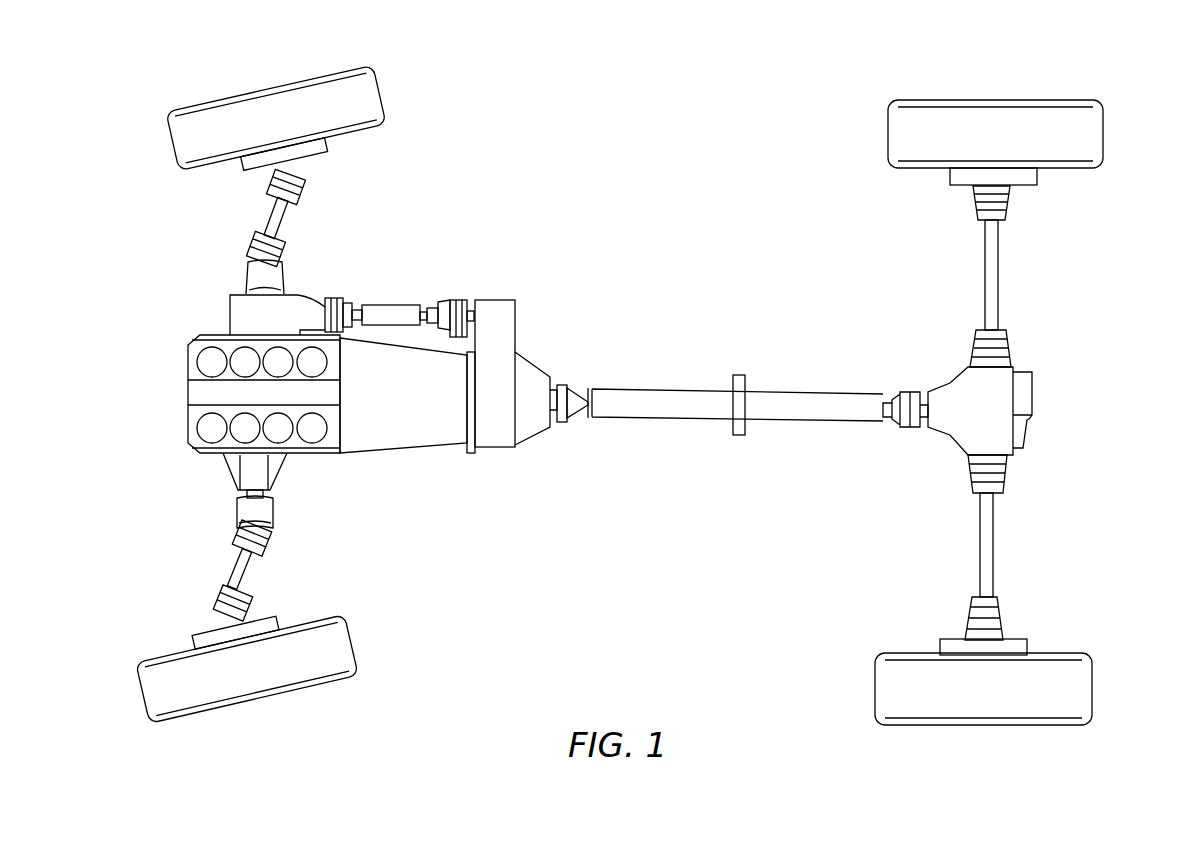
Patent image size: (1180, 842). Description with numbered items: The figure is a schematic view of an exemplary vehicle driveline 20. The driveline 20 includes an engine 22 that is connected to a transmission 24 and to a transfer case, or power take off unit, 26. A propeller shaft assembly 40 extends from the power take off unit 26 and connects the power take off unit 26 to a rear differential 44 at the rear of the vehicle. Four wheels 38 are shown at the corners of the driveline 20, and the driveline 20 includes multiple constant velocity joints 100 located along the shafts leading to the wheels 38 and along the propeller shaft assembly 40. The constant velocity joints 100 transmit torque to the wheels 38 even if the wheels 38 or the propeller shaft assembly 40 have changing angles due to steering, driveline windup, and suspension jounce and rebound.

The driveline 20 is at (636, 242).
The engine 22 is at (207, 392).
The transmission 24 is at (397, 437).
The power take off unit 26 is at (493, 437).
The wheels 38 is at (365, 97).
The propeller shaft assembly 40 is at (678, 397).
The rear differential 44 is at (993, 420).
The constant velocity joints 100 is at (305, 190).